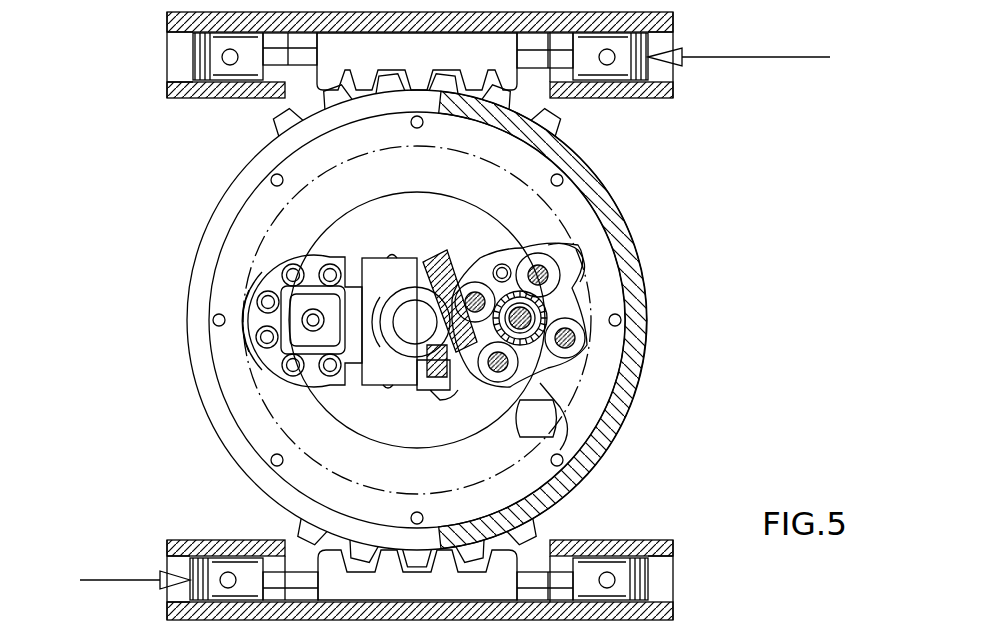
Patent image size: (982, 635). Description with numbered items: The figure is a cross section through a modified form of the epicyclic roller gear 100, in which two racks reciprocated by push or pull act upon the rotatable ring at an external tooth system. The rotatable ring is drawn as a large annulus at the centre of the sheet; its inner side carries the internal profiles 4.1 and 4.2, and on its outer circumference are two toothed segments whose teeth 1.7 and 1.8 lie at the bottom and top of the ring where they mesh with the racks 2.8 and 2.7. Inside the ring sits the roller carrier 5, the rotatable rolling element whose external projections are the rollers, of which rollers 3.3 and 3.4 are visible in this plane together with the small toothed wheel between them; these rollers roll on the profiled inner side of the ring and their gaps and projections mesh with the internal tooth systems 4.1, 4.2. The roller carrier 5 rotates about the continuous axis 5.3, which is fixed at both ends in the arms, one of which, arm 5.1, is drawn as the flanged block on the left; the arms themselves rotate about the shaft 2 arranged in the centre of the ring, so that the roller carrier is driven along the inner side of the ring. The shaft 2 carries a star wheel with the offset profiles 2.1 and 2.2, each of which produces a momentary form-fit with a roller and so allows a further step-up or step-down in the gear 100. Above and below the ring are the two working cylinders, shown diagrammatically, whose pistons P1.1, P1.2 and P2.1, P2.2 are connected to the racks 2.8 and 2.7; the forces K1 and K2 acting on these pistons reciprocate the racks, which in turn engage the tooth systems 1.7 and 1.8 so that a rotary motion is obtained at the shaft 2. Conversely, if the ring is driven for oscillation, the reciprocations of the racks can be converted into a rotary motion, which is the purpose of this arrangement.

The epicyclic roller gear 100 is at (148, 323).
The teeth of toothed segment 1.7 is at (540, 532).
The teeth of toothed segment 1.8 is at (543, 104).
The shaft 2 is at (420, 372).
The profile of star wheel 2.1 is at (448, 372).
The profile of star wheel 2.2 is at (435, 258).
The lower toothed rack 2.7 is at (333, 582).
The rack 2.8 is at (343, 52).
The roller 3.3 is at (490, 262).
The roller 3.4 is at (583, 343).
The internal profile of second ring 4.1 is at (560, 250).
The internal profile of second ring 4.2 is at (557, 300).
The roller carrier 5 is at (305, 298).
The arm 5.1 is at (372, 275).
The axis of roller carrier 5.3 is at (545, 412).
The piston P1.1 is at (618, 100).
The piston P1.2 is at (193, 101).
The piston P2.1 is at (617, 540).
The piston P2.2 is at (203, 540).
The force K1 is at (739, 40).
The force K2 is at (135, 564).